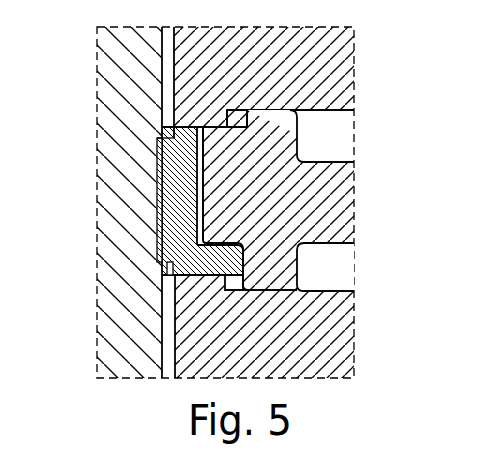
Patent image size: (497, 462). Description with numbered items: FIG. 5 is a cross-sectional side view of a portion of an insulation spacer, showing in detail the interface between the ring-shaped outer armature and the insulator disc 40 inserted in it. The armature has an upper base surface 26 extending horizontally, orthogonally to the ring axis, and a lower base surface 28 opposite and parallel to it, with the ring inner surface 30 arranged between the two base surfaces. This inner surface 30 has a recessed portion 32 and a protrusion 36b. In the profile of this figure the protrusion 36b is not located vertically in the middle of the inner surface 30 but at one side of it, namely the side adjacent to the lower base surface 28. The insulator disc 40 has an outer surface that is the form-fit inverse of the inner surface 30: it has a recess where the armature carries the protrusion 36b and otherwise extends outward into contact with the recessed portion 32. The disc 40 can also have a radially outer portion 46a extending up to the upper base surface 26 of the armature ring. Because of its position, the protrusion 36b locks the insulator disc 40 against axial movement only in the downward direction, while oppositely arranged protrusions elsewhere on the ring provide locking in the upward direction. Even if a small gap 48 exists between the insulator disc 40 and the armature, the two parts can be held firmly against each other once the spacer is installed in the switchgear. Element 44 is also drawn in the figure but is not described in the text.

The upper base surface 26 is at (190, 127).
The lower base surface 28 is at (212, 287).
The inner surface 30 is at (157, 141).
The recessed portion 32 is at (186, 192).
The protrusion 36b is at (241, 248).
The insulator disc 40 is at (260, 167).
The lower plate 44 is at (296, 258).
The radially outer portion 46a is at (247, 115).
The gap 48 is at (225, 227).